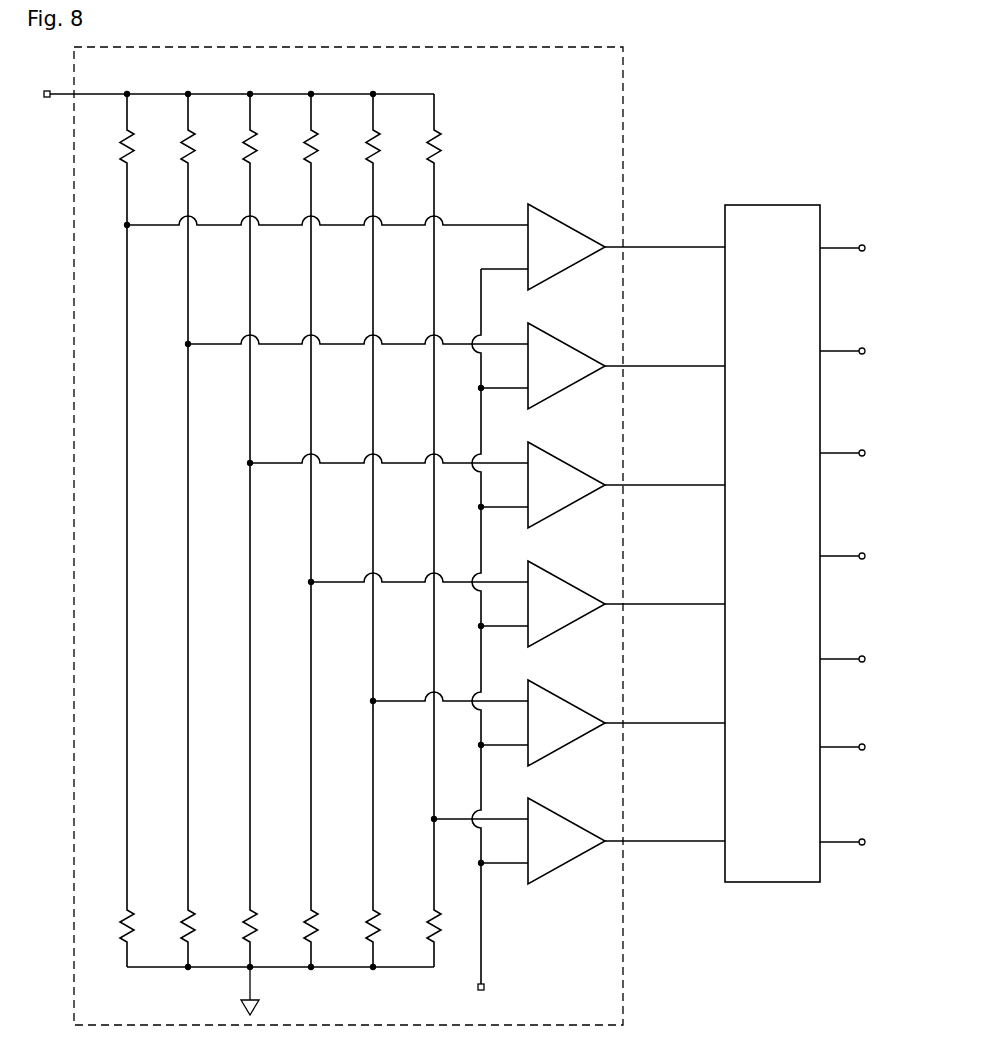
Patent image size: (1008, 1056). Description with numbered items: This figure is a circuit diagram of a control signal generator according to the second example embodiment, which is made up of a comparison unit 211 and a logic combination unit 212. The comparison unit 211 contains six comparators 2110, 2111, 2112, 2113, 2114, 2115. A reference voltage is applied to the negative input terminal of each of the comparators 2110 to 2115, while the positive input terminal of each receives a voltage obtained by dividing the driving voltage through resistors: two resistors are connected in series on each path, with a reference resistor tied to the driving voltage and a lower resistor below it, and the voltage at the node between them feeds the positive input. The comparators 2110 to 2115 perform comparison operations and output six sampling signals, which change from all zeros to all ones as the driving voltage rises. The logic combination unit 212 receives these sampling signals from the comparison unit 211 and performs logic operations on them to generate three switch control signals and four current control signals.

The comparison unit 211 is at (623, 122).
The logic combination unit 212 is at (761, 205).
The comparator 2110 is at (567, 816).
The comparator 2111 is at (567, 698).
The comparator 2112 is at (567, 579).
The comparator 2113 is at (567, 460).
The comparator 2114 is at (567, 341).
The comparator 2115 is at (567, 222).